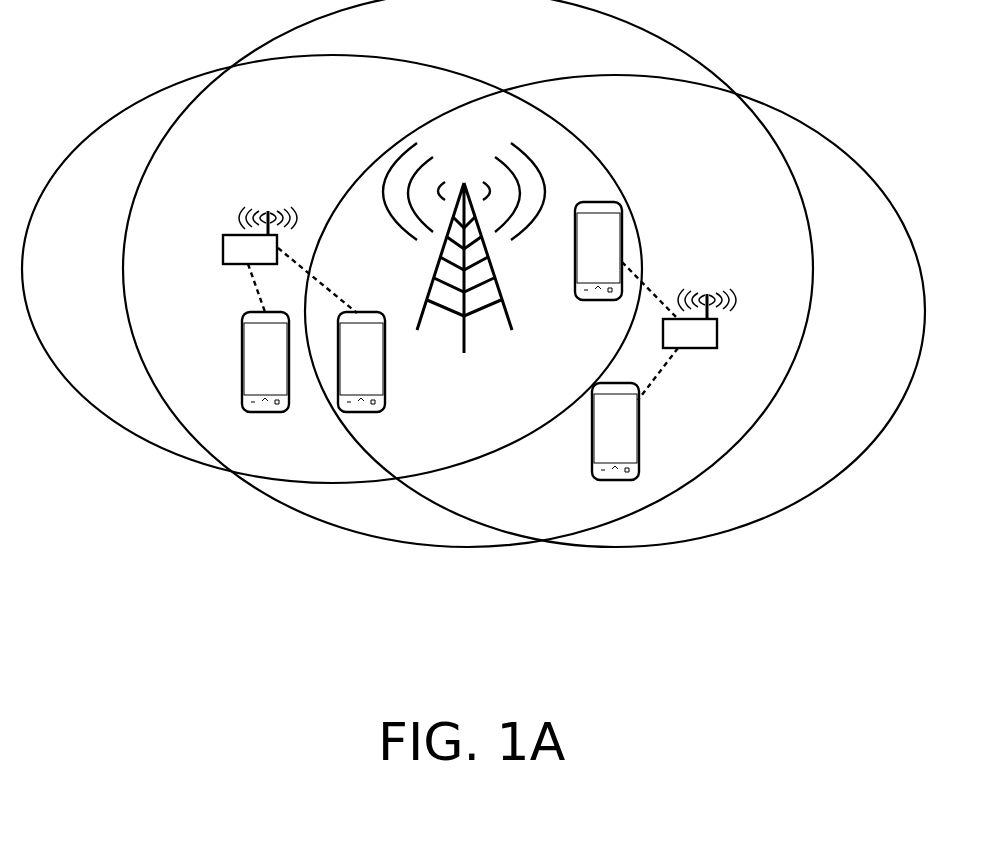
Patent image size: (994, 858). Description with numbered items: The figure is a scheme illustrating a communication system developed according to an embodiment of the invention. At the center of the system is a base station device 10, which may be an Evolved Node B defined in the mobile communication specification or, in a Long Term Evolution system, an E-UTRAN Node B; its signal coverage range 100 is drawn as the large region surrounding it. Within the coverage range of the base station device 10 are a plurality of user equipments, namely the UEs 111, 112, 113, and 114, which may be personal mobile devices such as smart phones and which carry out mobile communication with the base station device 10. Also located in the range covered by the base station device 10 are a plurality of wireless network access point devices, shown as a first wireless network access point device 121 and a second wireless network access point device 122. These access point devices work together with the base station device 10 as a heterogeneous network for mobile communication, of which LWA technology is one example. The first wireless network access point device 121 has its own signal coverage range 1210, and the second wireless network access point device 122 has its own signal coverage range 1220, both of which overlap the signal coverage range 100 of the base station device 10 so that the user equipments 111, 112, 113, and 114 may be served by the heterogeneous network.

The base station device 10 is at (477, 287).
The signal coverage range 100 is at (423, 546).
The user equipment 111 is at (268, 412).
The user equipment 112 is at (385, 352).
The user equipment 113 is at (575, 250).
The user equipment 114 is at (592, 443).
The first wireless network access point device 121 is at (223, 251).
The second wireless network access point device 122 is at (702, 337).
The signal coverage range 1210 is at (160, 447).
The signal coverage range 1220 is at (690, 546).